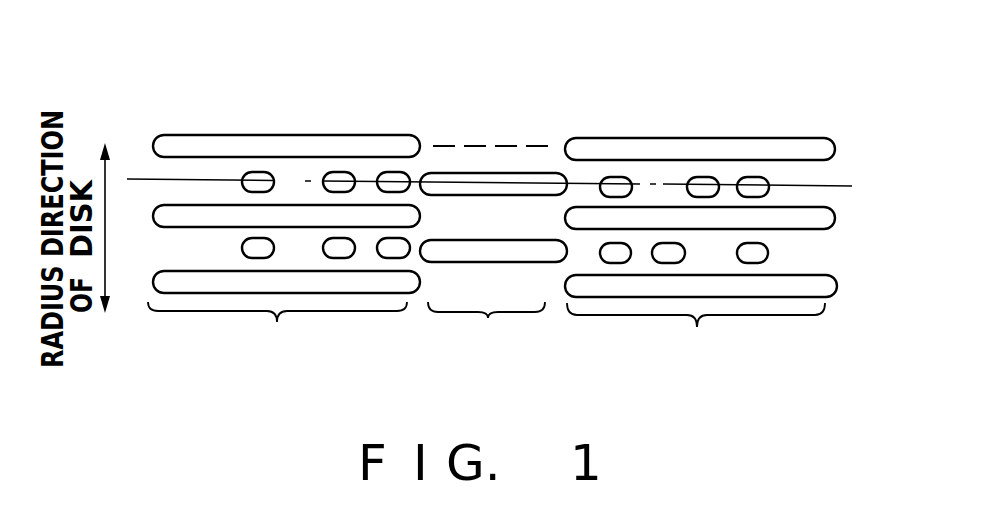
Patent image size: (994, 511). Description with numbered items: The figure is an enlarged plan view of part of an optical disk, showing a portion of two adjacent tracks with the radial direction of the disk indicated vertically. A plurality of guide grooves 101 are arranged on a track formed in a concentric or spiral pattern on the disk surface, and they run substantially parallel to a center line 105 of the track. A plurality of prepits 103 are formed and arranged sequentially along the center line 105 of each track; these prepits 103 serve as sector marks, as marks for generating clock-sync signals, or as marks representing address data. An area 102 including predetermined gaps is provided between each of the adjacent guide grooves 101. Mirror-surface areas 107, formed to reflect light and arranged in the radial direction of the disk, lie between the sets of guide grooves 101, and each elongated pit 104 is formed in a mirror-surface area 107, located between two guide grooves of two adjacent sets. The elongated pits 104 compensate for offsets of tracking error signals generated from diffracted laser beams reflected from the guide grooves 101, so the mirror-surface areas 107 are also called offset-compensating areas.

The guide grooves 101 is at (645, 150).
The area 102 is at (460, 143).
The prepits 103 is at (705, 180).
The elongated pits 104 is at (523, 180).
The center line 105 is at (838, 185).
The mirror-surface areas 107 is at (503, 230).